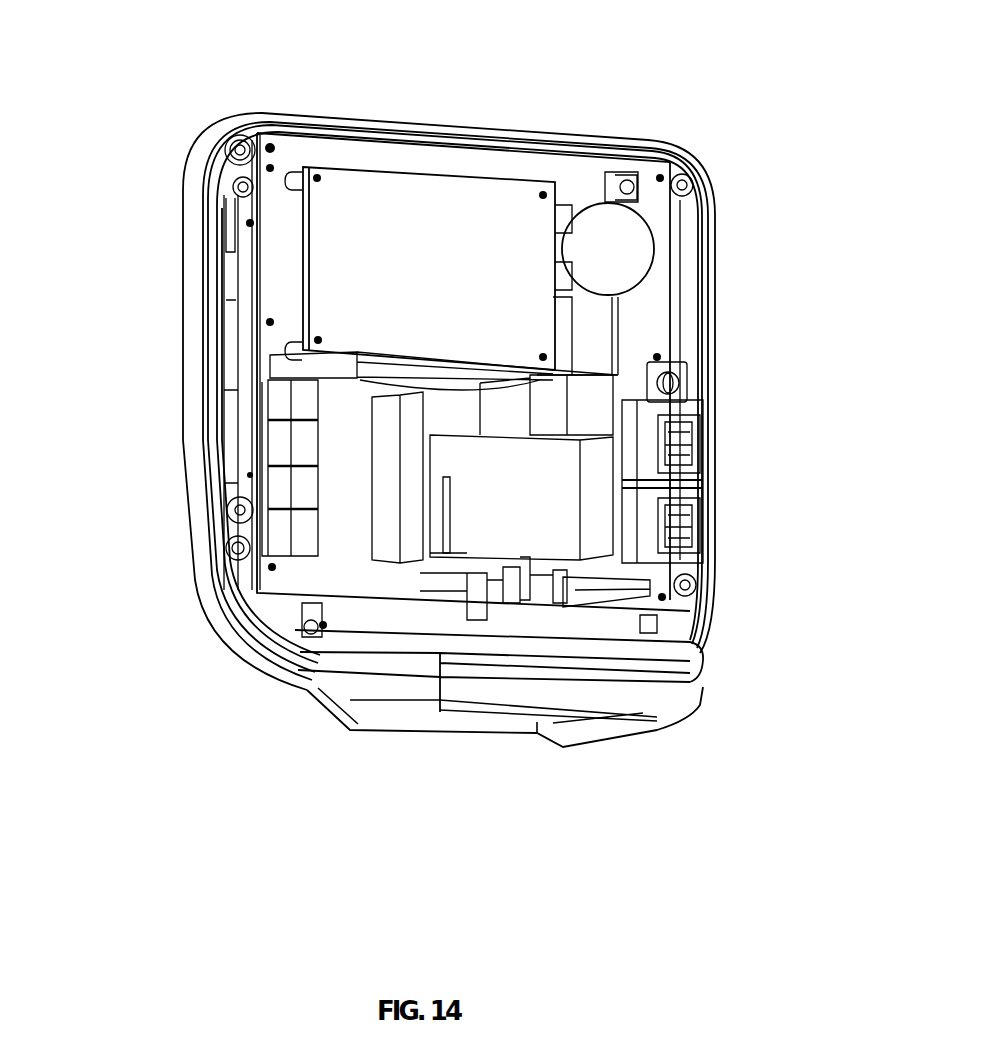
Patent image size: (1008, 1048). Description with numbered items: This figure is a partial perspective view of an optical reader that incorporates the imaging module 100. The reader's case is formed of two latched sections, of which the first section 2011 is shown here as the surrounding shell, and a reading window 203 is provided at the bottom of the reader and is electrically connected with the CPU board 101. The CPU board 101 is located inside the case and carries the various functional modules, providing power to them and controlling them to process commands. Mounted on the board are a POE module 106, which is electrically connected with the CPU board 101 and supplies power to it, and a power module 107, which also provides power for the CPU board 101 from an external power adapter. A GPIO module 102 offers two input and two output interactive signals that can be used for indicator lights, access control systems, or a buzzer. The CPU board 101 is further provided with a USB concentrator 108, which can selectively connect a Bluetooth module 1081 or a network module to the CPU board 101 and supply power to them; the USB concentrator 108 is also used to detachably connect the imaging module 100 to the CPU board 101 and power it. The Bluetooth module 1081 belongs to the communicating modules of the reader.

The imaging module 100 is at (413, 223).
The CPU board 101 is at (280, 206).
The Bluetooth module 1081 is at (290, 368).
The GPIO module 102 is at (292, 487).
The POE module 106 is at (610, 268).
The power module 107 is at (692, 373).
The USB concentrator 108 is at (700, 453).
The first section 2011 is at (243, 650).
The reading window 203 is at (533, 720).